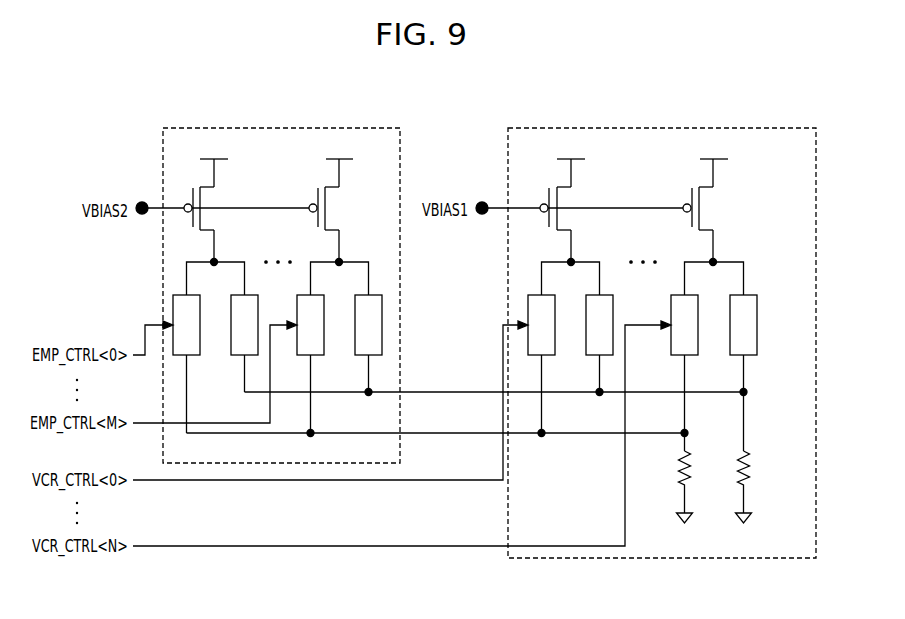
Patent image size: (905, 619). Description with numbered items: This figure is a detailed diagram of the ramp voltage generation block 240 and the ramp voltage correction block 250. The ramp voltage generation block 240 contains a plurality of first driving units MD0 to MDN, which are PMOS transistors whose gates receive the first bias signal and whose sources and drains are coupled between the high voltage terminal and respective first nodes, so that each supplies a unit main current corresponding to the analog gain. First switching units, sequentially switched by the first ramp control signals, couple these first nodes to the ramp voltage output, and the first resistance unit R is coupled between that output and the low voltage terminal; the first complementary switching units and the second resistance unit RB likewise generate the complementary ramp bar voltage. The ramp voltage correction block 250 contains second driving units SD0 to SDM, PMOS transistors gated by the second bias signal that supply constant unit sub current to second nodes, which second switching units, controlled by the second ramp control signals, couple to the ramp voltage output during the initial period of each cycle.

The ramp voltage correction block 250 is at (357, 128).
The ramp voltage generation block 240 is at (763, 128).
The second driving unit SD0 is at (214, 210).
The second driving unit SDM is at (340, 210).
The first driving unit MD0 is at (571, 210).
The first driving unit MDN is at (715, 210).
The first resistance unit R is at (679, 478).
The second resistance unit RB is at (753, 457).